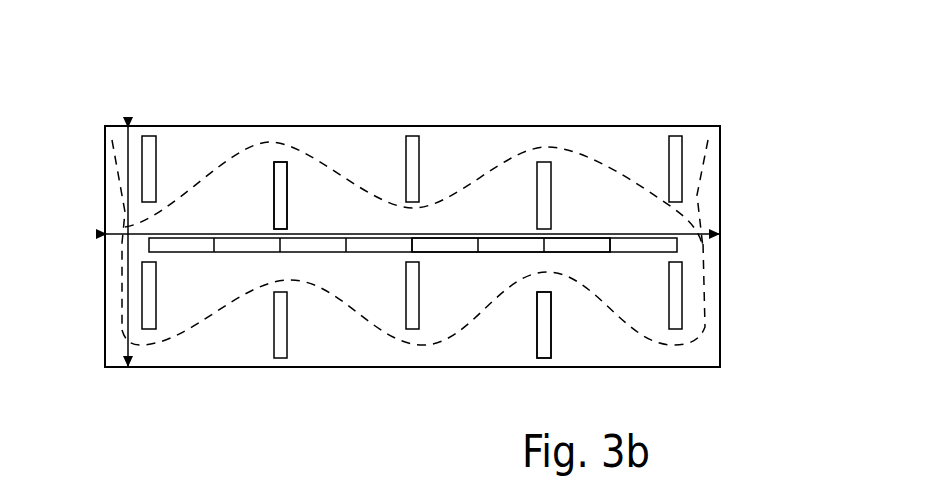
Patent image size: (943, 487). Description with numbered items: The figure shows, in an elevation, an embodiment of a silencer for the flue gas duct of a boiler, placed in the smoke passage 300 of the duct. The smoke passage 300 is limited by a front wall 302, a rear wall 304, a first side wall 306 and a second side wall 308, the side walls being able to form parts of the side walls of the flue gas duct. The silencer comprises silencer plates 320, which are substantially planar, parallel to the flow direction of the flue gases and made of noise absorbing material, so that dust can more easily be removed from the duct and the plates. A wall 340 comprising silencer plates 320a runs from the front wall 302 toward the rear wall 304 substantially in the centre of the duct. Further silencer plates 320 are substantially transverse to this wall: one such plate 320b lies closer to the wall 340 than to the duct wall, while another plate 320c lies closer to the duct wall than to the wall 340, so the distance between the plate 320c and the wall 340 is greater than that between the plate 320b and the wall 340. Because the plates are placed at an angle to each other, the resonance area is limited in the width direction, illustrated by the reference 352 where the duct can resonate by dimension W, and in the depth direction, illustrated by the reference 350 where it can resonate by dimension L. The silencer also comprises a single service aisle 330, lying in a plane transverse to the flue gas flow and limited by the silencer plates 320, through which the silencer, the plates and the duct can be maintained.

The smoke passage 300 is at (349, 340).
The front wall 302 is at (377, 376).
The rear wall 304 is at (387, 115).
The first side wall 306 is at (82, 220).
The second side wall 308 is at (728, 268).
The silencer plates 320 is at (233, 243).
The silencer plates forming the wall 320a is at (552, 245).
The silencer plate 320b is at (282, 187).
The silencer plate 320c is at (544, 334).
The service aisle 330 is at (557, 152).
The wall 340 is at (609, 243).
The limited resonance area 350 is at (128, 152).
The limited resonance area 352 is at (673, 234).